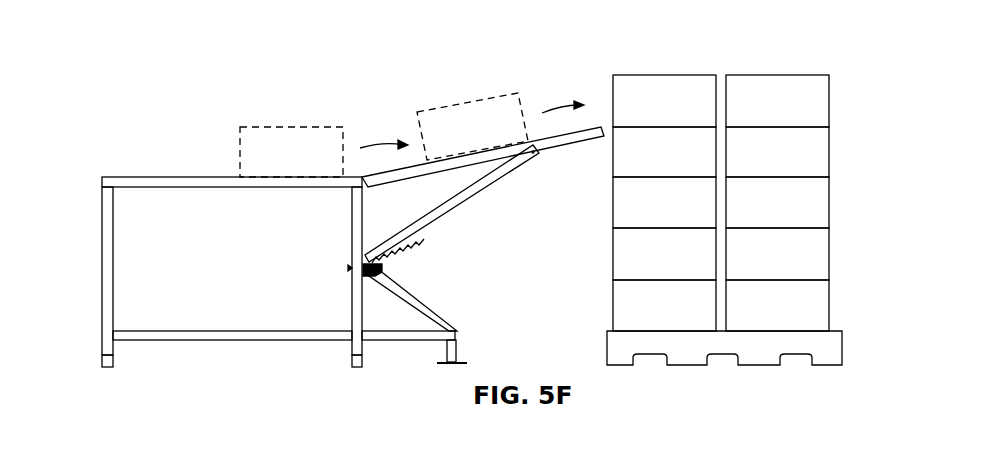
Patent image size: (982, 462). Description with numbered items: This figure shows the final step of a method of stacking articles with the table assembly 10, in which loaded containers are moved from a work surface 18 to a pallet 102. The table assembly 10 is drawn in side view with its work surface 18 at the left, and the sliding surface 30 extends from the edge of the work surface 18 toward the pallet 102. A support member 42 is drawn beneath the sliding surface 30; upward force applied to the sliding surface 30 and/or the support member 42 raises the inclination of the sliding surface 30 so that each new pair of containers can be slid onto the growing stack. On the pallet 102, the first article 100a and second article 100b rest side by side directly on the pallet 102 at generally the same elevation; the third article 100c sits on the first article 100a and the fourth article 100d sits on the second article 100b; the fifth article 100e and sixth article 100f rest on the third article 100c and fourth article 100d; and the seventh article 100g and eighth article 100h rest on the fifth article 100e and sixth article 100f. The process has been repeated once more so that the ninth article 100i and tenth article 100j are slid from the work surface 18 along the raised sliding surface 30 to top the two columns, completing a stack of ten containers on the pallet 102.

The table assembly 10 is at (372, 104).
The work surface 18 is at (113, 177).
The sliding surface 30 is at (532, 140).
The support member 42 is at (455, 206).
The first article 100a is at (828, 324).
The second article 100b is at (614, 296).
The third article 100c is at (828, 270).
The fourth article 100d is at (614, 244).
The fifth article 100e is at (828, 218).
The sixth article 100f is at (614, 190).
The seventh article 100g is at (828, 168).
The eighth article 100h is at (614, 138).
The ninth article 100i is at (820, 83).
The tenth article 100j is at (333, 124).
The pallet 102 is at (693, 357).